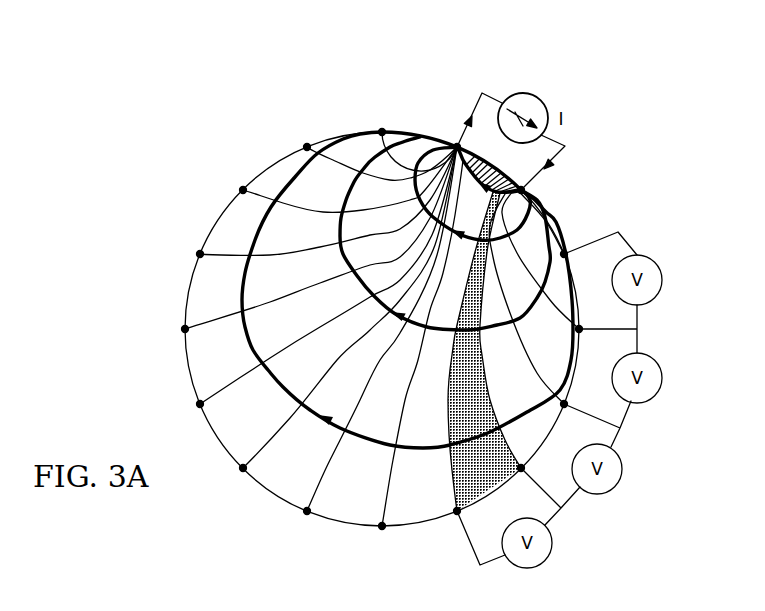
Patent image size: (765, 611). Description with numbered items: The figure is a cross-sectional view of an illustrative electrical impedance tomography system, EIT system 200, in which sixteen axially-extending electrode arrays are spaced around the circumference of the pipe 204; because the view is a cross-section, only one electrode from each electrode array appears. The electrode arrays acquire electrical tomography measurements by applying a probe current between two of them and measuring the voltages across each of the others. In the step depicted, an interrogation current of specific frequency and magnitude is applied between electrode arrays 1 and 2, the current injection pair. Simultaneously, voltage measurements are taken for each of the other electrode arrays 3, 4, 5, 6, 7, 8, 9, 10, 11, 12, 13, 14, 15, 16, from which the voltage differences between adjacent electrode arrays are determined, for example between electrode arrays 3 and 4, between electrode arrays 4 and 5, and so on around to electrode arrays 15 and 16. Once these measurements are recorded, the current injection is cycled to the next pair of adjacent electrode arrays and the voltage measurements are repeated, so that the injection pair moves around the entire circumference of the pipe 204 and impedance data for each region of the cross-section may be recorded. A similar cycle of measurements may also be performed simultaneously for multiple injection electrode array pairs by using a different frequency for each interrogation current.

The electrode array 1 is at (461, 122).
The electrode array 2 is at (543, 177).
The electrode array 3 is at (580, 238).
The electrode array 4 is at (591, 319).
The electrode array 5 is at (579, 400).
The electrode array 6 is at (535, 475).
The electrode array 7 is at (460, 536).
The electrode array 8 is at (382, 526).
The electrode array 9 is at (307, 511).
The electrode array 10 is at (243, 468).
The electrode array 11 is at (200, 404).
The electrode array 12 is at (185, 329).
The electrode array 13 is at (200, 254).
The electrode array 14 is at (243, 190).
The electrode array 15 is at (307, 147).
The electrode array 16 is at (382, 132).
The EIT system 200 is at (242, 116).
The pipe 204 is at (219, 218).